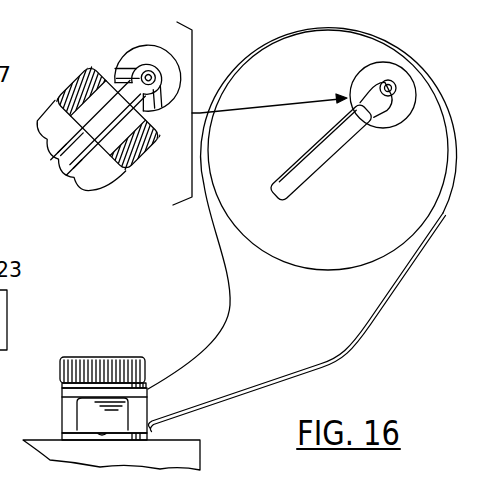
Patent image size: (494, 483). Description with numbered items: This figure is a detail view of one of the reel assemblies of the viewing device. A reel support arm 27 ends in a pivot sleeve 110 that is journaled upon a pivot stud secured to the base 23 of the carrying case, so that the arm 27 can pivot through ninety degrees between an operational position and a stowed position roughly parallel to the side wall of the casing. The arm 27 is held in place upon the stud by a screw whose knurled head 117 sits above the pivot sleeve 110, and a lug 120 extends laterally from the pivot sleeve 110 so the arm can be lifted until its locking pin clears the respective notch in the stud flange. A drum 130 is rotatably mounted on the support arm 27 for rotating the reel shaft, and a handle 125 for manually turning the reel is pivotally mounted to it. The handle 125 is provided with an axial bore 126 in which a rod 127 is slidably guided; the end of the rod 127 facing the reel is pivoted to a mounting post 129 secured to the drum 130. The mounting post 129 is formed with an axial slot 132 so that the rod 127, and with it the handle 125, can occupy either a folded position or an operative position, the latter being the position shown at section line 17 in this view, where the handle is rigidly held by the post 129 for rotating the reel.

The section line 17- 17 is at (460, 53).
The base 23 is at (190, 452).
The reel support arm 27 is at (248, 293).
The pivot sleeve 110 is at (67, 413).
The knurled head 117 is at (105, 365).
The lug 120 is at (58, 399).
The handle 125 is at (314, 168).
The axial bore 126 is at (120, 140).
The rod 127 is at (95, 133).
The mounting post 129 is at (157, 52).
The drum 130 is at (417, 213).
The axial slot 132 is at (160, 66).